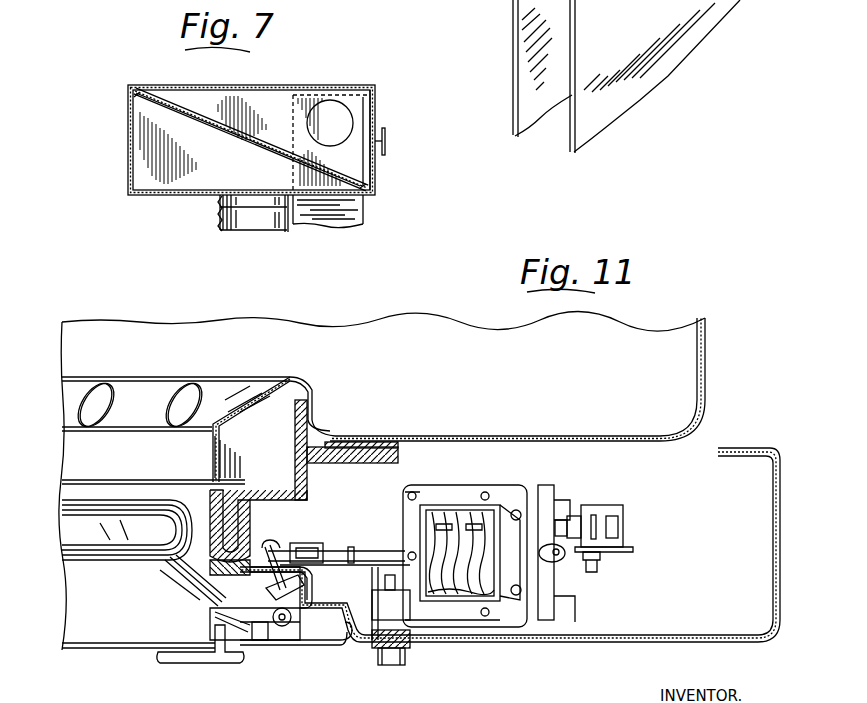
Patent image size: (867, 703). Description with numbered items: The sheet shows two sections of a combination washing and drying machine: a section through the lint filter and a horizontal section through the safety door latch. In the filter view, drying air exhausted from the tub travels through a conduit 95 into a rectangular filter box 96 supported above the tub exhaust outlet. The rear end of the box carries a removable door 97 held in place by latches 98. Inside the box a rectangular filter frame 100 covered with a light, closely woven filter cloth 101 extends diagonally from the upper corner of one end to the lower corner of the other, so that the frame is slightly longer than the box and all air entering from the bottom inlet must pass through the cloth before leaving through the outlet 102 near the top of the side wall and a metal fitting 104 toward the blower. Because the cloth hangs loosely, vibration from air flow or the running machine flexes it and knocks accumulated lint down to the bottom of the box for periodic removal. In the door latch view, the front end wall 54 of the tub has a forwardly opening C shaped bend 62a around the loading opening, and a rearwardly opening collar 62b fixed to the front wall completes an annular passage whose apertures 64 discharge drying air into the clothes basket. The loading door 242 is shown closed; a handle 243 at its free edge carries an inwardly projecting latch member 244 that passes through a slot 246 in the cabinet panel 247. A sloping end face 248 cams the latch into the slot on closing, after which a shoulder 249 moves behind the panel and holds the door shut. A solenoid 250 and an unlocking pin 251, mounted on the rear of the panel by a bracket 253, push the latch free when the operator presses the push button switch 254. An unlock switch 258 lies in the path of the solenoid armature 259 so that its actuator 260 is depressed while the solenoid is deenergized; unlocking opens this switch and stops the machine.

In FIG. 11, the front end wall 54 is at (483, 437).
In FIG. 11, the C shaped bend 62a is at (318, 390).
In FIG. 11, the circular channel or collar 62b is at (382, 493).
In FIG. 11, the apertures 64 is at (190, 390).
In FIG. 7, the conduit 95 is at (292, 228).
In FIG. 7, the filter box 96 is at (268, 85).
In FIG. 7, the removable door 97 is at (377, 103).
In FIG. 7, the latches 98 is at (388, 142).
In FIG. 7, the filter frame 100 is at (132, 100).
In FIG. 7, the filter cloth 101 is at (207, 122).
In FIG. 7, the outlet 102 is at (336, 102).
In FIG. 7, the metal fitting 104 is at (370, 212).
In FIG. 11, the door 242 is at (272, 640).
In FIG. 11, the handle 243 is at (200, 665).
In FIG. 11, the latch member 244 is at (270, 545).
In FIG. 11, the slot 246 is at (200, 598).
In FIG. 11, the cabinet panel 247 is at (478, 645).
In FIG. 11, the sloping end face 248 is at (283, 557).
In FIG. 11, the shoulder 249 is at (306, 572).
In FIG. 11, the solenoid 250 is at (455, 488).
In FIG. 11, the unlocking pin 251 is at (352, 548).
In FIG. 11, the bracket 253 is at (582, 598).
In FIG. 11, the push button switch 254 is at (396, 668).
In FIG. 11, the unlock switch 258 is at (612, 504).
In FIG. 11, the solenoid armature 259 is at (556, 488).
In FIG. 11, the switch actuator 260 is at (558, 516).